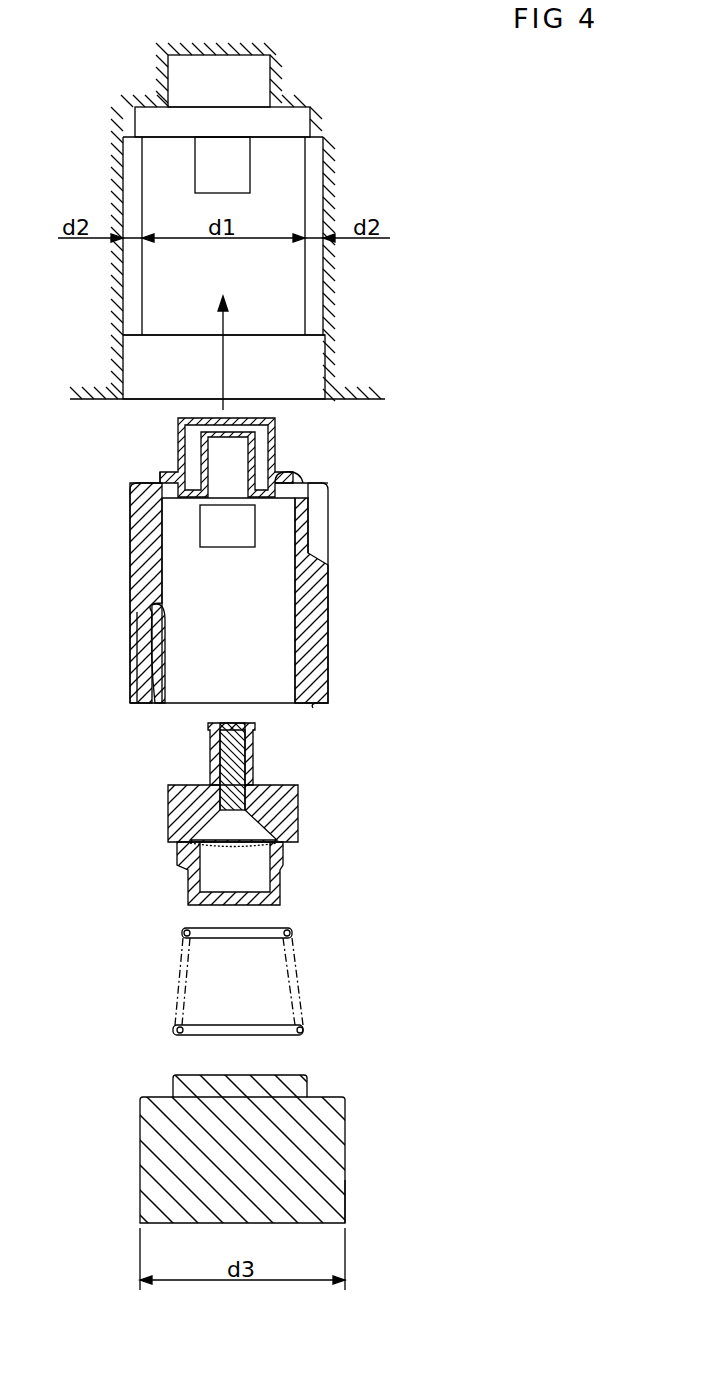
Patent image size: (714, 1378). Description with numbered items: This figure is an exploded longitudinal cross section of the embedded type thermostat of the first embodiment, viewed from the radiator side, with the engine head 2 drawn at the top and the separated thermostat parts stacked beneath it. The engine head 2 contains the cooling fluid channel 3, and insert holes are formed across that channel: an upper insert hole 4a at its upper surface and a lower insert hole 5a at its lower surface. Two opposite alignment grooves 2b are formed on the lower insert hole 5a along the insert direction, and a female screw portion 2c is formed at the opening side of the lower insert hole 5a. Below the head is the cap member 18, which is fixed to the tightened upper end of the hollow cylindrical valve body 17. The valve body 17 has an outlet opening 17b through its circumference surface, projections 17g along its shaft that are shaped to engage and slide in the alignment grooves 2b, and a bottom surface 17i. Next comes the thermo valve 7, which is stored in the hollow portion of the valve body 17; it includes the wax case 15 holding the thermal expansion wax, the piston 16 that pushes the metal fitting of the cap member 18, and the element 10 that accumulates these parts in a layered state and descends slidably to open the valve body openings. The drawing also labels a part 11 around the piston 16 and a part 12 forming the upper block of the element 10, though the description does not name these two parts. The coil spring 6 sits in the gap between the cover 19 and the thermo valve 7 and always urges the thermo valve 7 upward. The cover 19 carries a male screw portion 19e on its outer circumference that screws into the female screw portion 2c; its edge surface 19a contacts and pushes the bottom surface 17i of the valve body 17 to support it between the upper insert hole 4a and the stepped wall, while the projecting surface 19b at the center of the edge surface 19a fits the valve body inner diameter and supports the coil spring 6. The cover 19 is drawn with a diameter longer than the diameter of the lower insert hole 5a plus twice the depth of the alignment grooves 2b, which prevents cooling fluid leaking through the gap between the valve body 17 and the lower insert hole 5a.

The engine head 2 is at (425, 228).
The alignment groove 2b is at (130, 268).
The female screw portion 2c is at (323, 360).
The cooling fluid channel 3 is at (233, 155).
The upper insert hole 4a is at (170, 92).
The lower insert hole 5a is at (270, 173).
The coil spring 6 is at (253, 938).
The thermo valve 7 is at (175, 882).
The element 10 is at (241, 814).
The valve stem tube 11 is at (253, 748).
The valve body 12 is at (298, 800).
The wax case 15 is at (283, 870).
The piston 16 is at (252, 736).
The valve body 17 is at (300, 465).
The outlet opening 17b is at (262, 548).
The projection 17g is at (330, 513).
The bottom surface 17i is at (313, 708).
The cap member 18 is at (273, 418).
The cover 19 is at (313, 1148).
The edge surface 19a is at (251, 1144).
The projecting surface 19b is at (307, 1072).
The male screw portion 19e is at (345, 1185).